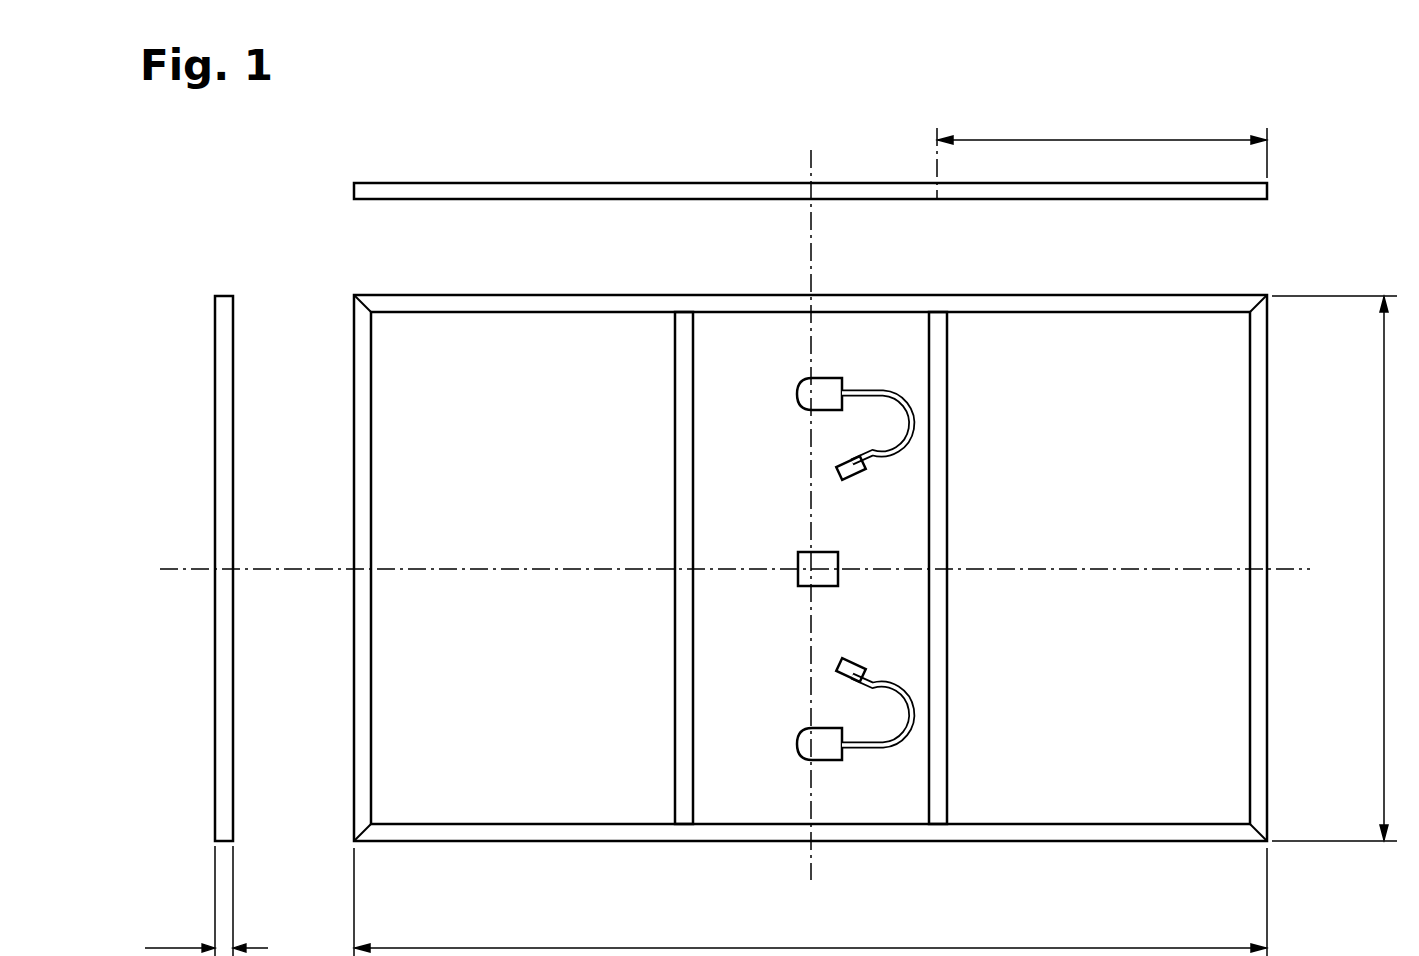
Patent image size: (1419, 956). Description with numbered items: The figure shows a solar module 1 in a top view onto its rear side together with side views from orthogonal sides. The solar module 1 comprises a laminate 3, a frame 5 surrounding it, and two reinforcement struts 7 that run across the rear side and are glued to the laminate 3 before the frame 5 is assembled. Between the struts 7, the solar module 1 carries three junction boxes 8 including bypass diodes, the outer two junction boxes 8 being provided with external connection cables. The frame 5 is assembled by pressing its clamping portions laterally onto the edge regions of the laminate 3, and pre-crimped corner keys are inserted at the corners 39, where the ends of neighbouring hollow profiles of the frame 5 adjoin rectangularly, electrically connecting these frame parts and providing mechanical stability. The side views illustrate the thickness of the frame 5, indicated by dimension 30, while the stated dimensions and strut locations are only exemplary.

The solar module 1 is at (228, 173).
The laminate 3 is at (405, 418).
The frame 5 is at (517, 183).
The reinforcement struts 7 is at (675, 365).
The junction boxes 8 is at (774, 534).
The thickness 30 is at (206, 901).
The corners 39 is at (1282, 284).